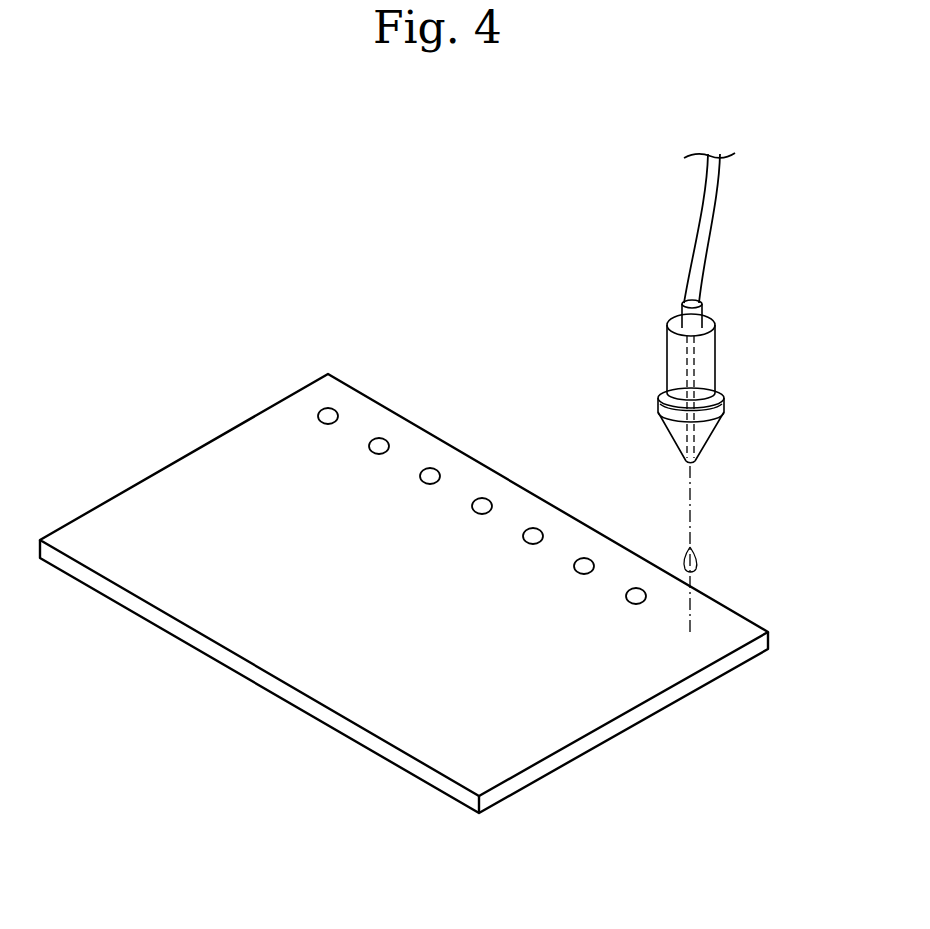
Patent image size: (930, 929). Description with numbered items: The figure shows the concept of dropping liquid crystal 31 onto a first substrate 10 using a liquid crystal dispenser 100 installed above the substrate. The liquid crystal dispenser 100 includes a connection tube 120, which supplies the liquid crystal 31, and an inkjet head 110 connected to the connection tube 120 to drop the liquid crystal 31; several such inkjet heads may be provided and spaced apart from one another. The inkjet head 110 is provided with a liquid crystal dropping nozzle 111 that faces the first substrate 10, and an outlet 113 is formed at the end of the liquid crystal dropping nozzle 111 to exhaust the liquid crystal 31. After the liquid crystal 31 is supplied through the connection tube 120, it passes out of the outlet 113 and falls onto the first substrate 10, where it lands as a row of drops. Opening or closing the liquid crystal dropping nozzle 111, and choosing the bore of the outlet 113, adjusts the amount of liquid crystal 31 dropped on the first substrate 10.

The first substrate 10 is at (173, 488).
The liquid crystal 31 is at (322, 410).
The liquid crystal dispenser 100 is at (662, 299).
The inkjet head 110 is at (708, 350).
The liquid crystal dropping nozzle 111 is at (722, 414).
The outlet 113 is at (696, 464).
The connection tube 120 is at (707, 240).